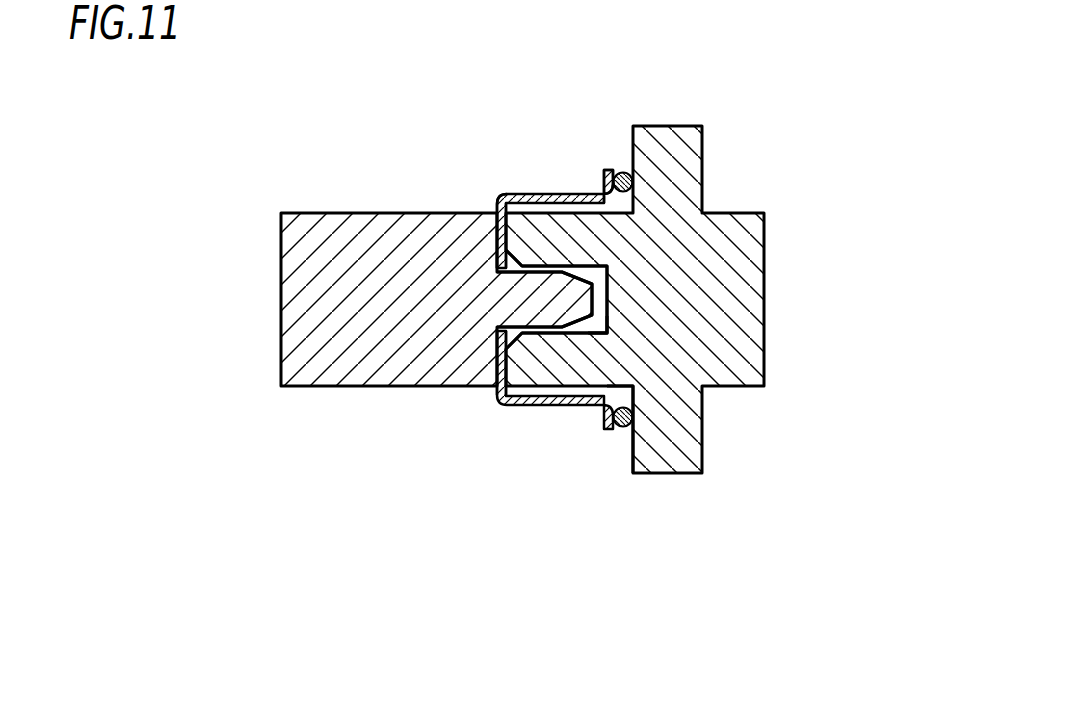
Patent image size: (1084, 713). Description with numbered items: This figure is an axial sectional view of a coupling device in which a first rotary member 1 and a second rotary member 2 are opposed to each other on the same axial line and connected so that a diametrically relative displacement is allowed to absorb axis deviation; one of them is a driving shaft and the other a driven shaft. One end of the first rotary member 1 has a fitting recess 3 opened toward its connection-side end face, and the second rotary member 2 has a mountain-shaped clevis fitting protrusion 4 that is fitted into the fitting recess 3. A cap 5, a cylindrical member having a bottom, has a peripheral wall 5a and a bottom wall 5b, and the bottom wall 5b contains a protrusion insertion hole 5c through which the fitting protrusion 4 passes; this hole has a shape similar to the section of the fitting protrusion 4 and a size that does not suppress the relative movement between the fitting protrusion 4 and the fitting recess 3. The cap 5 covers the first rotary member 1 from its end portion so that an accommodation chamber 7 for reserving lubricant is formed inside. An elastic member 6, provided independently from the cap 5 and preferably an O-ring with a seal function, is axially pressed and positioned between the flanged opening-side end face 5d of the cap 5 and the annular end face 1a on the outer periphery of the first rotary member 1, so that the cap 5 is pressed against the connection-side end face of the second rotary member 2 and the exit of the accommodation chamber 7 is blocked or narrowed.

The first rotary member 1 is at (683, 478).
The annular end face of the outer periphery of the first rotary member 1a is at (627, 436).
The second rotary member 2 is at (338, 388).
The fitting recess 3 is at (599, 297).
The fitting protrusion 4 is at (547, 305).
The cap 5 is at (555, 191).
The peripheral wall 5a is at (578, 194).
The bottom wall 5b is at (496, 213).
The protrusion insertion hole 5c is at (497, 334).
The opening-side end face of the cap 5d is at (634, 178).
The elastic member 6 is at (632, 420).
The accommodation chamber 7 is at (588, 328).